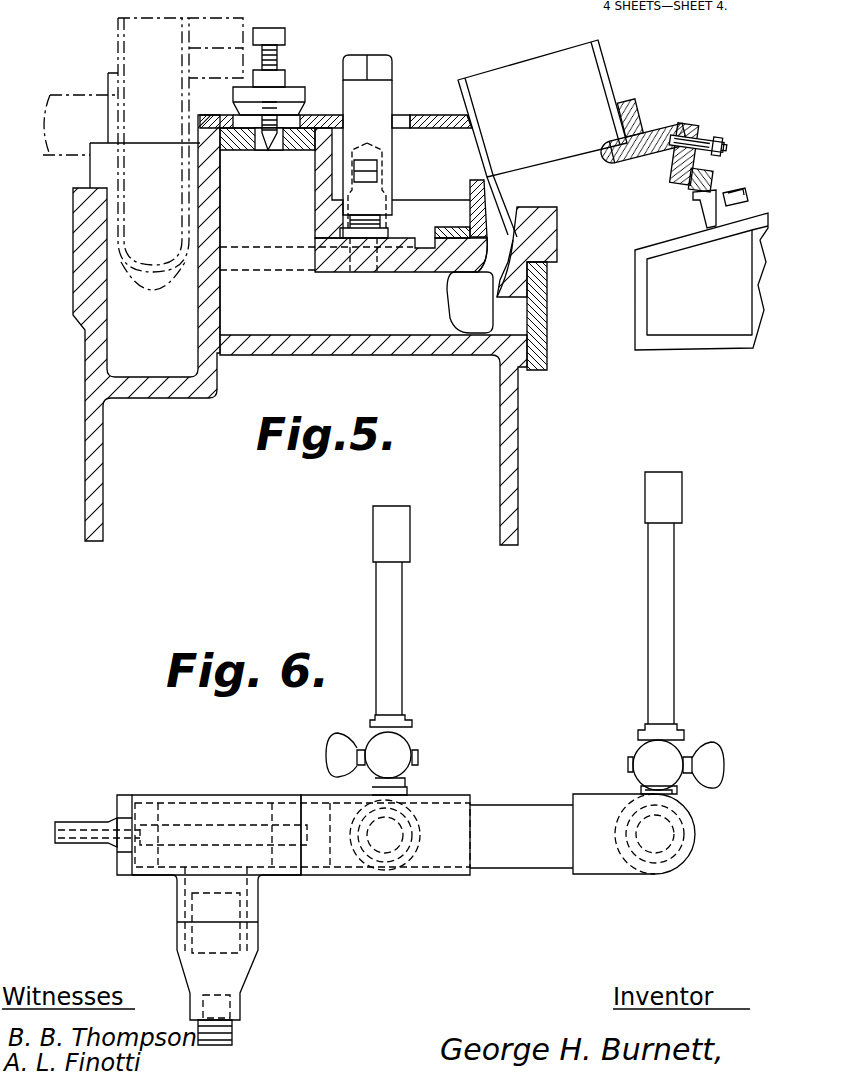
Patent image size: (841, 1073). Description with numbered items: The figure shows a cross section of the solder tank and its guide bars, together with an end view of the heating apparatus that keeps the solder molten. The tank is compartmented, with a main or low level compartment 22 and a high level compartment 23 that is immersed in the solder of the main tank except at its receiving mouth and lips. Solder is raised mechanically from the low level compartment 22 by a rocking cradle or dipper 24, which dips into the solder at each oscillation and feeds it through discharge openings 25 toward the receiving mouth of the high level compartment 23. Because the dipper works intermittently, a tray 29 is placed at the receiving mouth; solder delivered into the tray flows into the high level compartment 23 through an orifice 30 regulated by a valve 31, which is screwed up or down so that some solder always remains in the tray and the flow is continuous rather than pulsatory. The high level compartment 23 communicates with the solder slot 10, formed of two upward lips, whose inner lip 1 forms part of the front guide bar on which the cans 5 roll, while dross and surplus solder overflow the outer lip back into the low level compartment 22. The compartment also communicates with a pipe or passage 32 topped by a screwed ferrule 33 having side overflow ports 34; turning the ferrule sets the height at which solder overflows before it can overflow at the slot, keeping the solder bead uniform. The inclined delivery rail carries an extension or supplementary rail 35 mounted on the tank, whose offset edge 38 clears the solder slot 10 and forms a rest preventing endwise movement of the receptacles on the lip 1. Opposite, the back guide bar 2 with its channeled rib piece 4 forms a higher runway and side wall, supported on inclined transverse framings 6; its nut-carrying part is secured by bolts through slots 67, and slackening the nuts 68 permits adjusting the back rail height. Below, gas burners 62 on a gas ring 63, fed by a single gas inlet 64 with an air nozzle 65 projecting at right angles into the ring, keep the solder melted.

In FIG. 5, the front guide bar lip 1 is at (498, 190).
In FIG. 5, the back guide bar 2 is at (647, 113).
In FIG. 5, the channeled rib piece 4 is at (613, 163).
In FIG. 5, the cans 5 is at (530, 60).
In FIG. 5, the transverse framings 6 is at (638, 293).
In FIG. 5, the solder slot 10 is at (470, 190).
In FIG. 5, the main or low level compartment 22 is at (146, 328).
In FIG. 5, the high level compartment 23 is at (373, 347).
In FIG. 5, the rocking cradle or dipper 24 is at (113, 92).
In FIG. 5, the discharge openings 25 is at (225, 32).
In FIG. 5, the tray 29 is at (242, 150).
In FIG. 5, the orifice 30 is at (268, 150).
In FIG. 5, the valve 31 is at (277, 53).
In FIG. 5, the pipe or passage 32 is at (381, 222).
In FIG. 5, the ferrule 33 is at (380, 90).
In FIG. 5, the overflow ports 34 is at (378, 167).
In FIG. 5, the extension or supplementary rail 35 is at (435, 107).
In FIG. 5, the offset edge 38 is at (470, 124).
In FIG. 6, the gas burners 62 is at (397, 643).
In FIG. 6, the gas ring 63 is at (515, 856).
In FIG. 6, the gas inlet 64 is at (232, 980).
In FIG. 6, the air nozzle 65 is at (85, 822).
In FIG. 5, the slots 67 is at (686, 124).
In FIG. 5, the nuts 68 is at (722, 142).